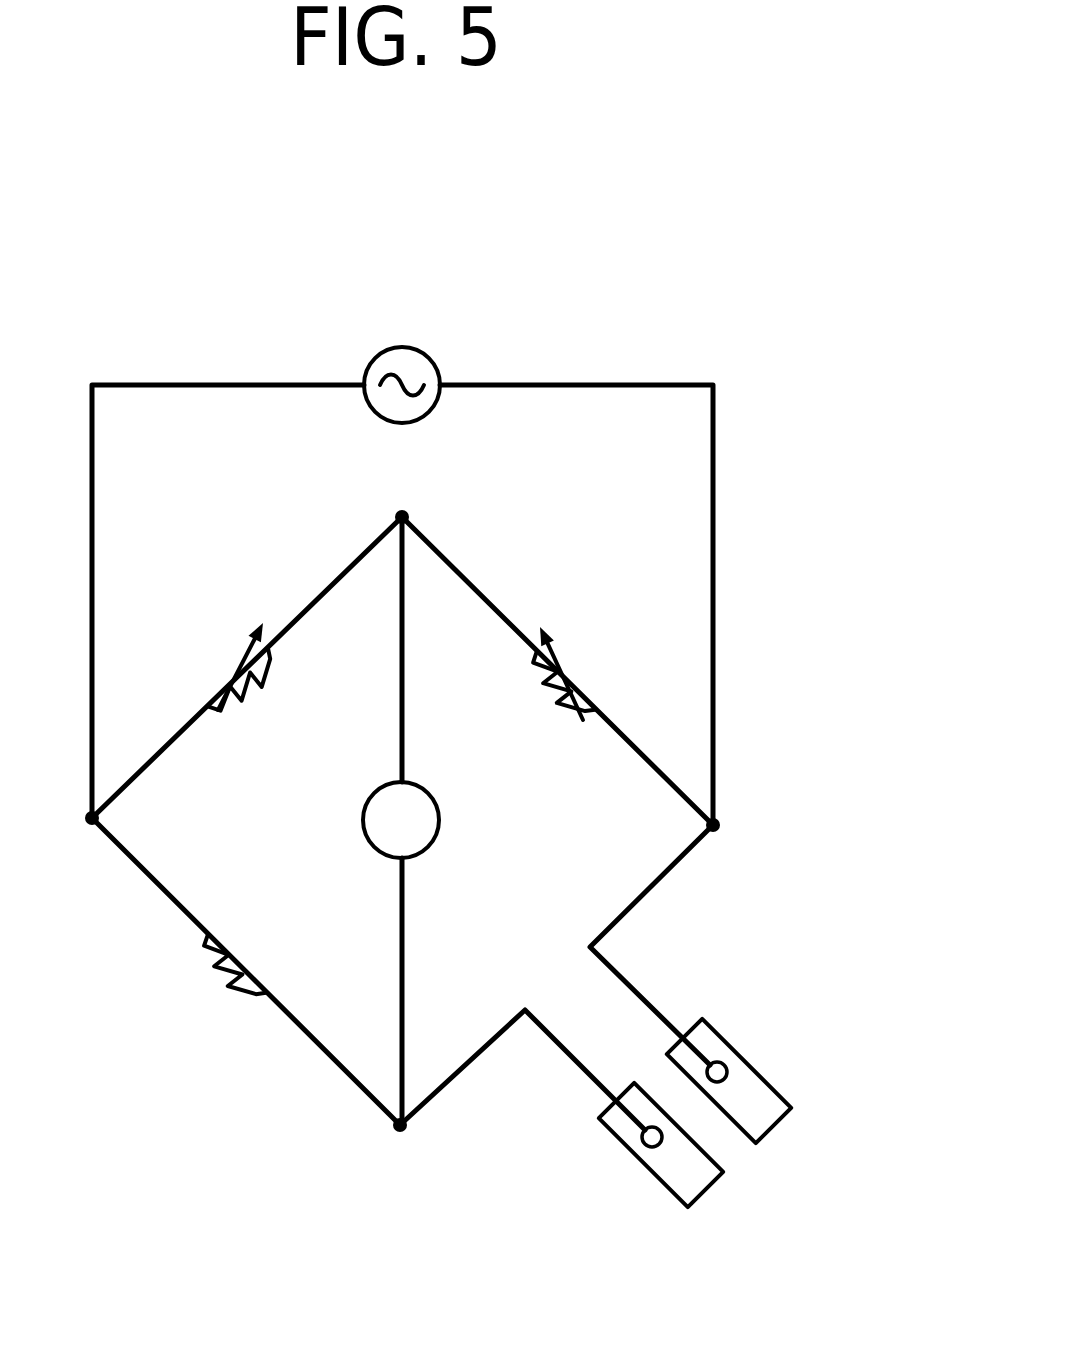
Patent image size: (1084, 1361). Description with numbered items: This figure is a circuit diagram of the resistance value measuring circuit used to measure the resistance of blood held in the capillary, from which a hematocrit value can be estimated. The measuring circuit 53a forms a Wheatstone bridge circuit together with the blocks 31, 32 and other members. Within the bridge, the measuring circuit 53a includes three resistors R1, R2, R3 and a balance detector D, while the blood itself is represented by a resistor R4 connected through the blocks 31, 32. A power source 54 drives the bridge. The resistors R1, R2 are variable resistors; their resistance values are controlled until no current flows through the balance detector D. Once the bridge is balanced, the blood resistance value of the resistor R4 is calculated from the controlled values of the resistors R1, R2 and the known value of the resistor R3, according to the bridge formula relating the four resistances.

The AC power source 54 is at (410, 347).
The measuring circuit 53a is at (762, 552).
The variable resistor R1 is at (582, 660).
The variable resistor R2 is at (232, 657).
The resistor R3 is at (223, 983).
The resistor R4 is at (712, 1130).
The block 31 is at (638, 1160).
The block 32 is at (763, 1067).